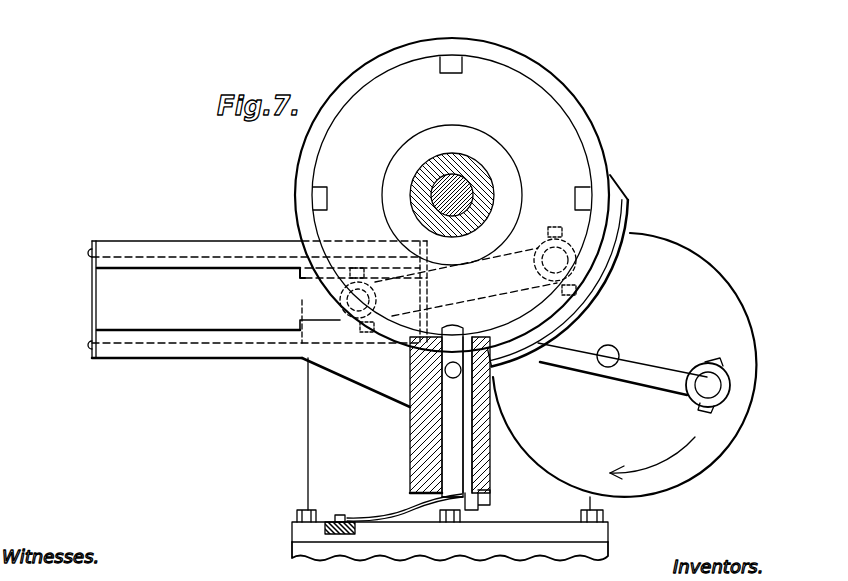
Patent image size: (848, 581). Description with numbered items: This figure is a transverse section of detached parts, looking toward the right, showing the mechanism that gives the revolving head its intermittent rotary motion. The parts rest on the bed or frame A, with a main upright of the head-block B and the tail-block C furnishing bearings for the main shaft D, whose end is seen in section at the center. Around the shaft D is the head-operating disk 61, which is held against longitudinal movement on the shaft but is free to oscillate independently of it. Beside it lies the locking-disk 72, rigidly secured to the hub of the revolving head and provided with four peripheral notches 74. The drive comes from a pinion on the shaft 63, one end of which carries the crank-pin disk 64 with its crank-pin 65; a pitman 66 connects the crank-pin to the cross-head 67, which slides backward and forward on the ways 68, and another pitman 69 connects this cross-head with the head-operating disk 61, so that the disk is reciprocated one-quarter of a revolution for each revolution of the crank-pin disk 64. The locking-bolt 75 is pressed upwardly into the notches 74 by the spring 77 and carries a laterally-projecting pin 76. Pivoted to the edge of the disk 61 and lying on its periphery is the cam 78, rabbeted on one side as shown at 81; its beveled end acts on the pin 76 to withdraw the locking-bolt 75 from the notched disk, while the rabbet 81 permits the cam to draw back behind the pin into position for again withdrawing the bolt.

The head-operating disk 61 is at (596, 141).
The shaft 63 is at (609, 346).
The crank-pin disk 64 is at (624, 371).
The crank-pin 65 is at (708, 385).
The pitman 66 is at (622, 369).
The cross-head 67 is at (330, 321).
The ways 68 is at (199, 266).
The pitman 69 is at (475, 271).
The locking-disk 72 is at (452, 195).
The peripheral notches 74 is at (440, 60).
The locking-bolt 75 is at (466, 417).
The laterally-projecting pin 76 is at (453, 370).
The spring 77 is at (407, 514).
The cam 78 is at (557, 271).
The rabbet 81 is at (501, 359).
The bed or frame A is at (457, 562).
The main uprights of the head-block B is at (410, 461).
The tail-block C is at (356, 434).
The main shaft D is at (434, 197).